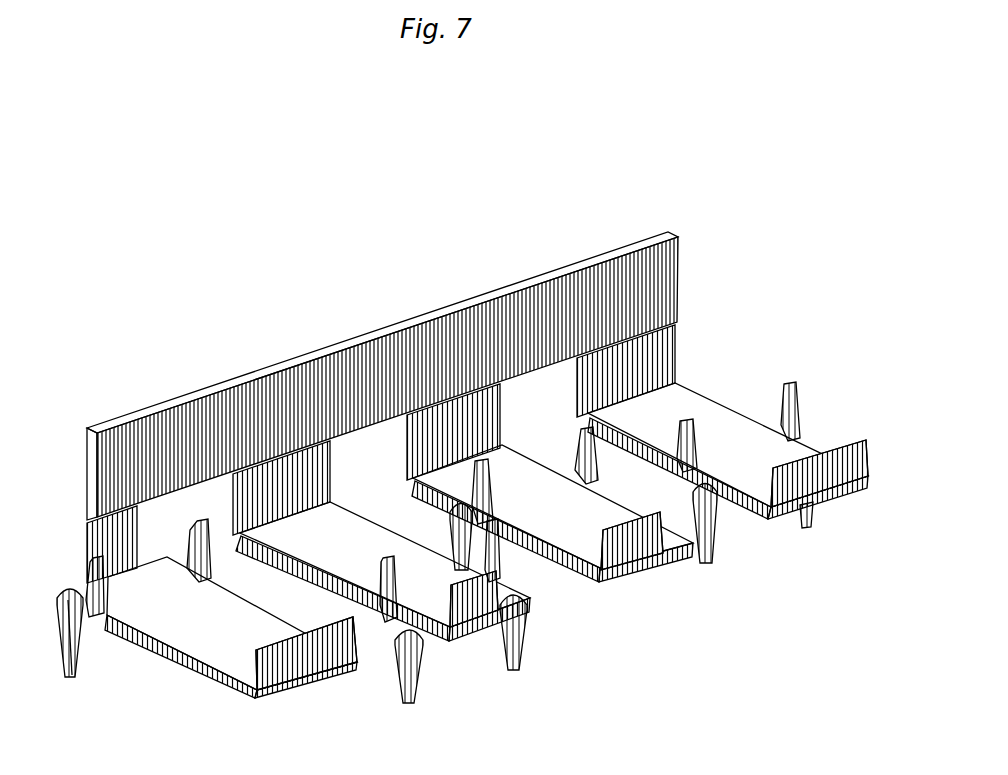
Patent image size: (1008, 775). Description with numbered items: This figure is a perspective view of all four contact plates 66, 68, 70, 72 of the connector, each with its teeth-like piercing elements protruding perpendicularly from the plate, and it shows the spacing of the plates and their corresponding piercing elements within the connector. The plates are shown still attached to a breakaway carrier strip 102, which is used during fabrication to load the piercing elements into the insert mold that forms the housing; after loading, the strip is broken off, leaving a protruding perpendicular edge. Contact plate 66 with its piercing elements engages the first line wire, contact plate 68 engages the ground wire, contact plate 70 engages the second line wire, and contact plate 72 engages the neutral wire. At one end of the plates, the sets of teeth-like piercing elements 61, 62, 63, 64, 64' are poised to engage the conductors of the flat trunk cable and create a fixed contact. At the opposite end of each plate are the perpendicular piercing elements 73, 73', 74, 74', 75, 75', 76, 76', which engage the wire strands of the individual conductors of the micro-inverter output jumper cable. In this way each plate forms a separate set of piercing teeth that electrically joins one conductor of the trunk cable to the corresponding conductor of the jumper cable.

The breakaway carrier strip 102 is at (415, 313).
The contact plate 66 is at (227, 690).
The contact plate 68 is at (276, 567).
The contact plate 70 is at (577, 577).
The contact plate 72 is at (818, 437).
The piercing element 61 is at (55, 612).
The piercing element 62 is at (445, 527).
The piercing element 63 is at (722, 532).
The piercing element 64 is at (430, 681).
The piercing element 64' is at (534, 644).
The perpendicular piercing element 73 is at (69, 568).
The perpendicular piercing element 73' is at (185, 538).
The perpendicular piercing element 74 is at (432, 491).
The perpendicular piercing element 74' is at (563, 437).
The perpendicular piercing element 75 is at (716, 411).
The perpendicular piercing element 75' is at (814, 391).
The perpendicular piercing element 76 is at (423, 614).
The perpendicular piercing element 76' is at (523, 563).